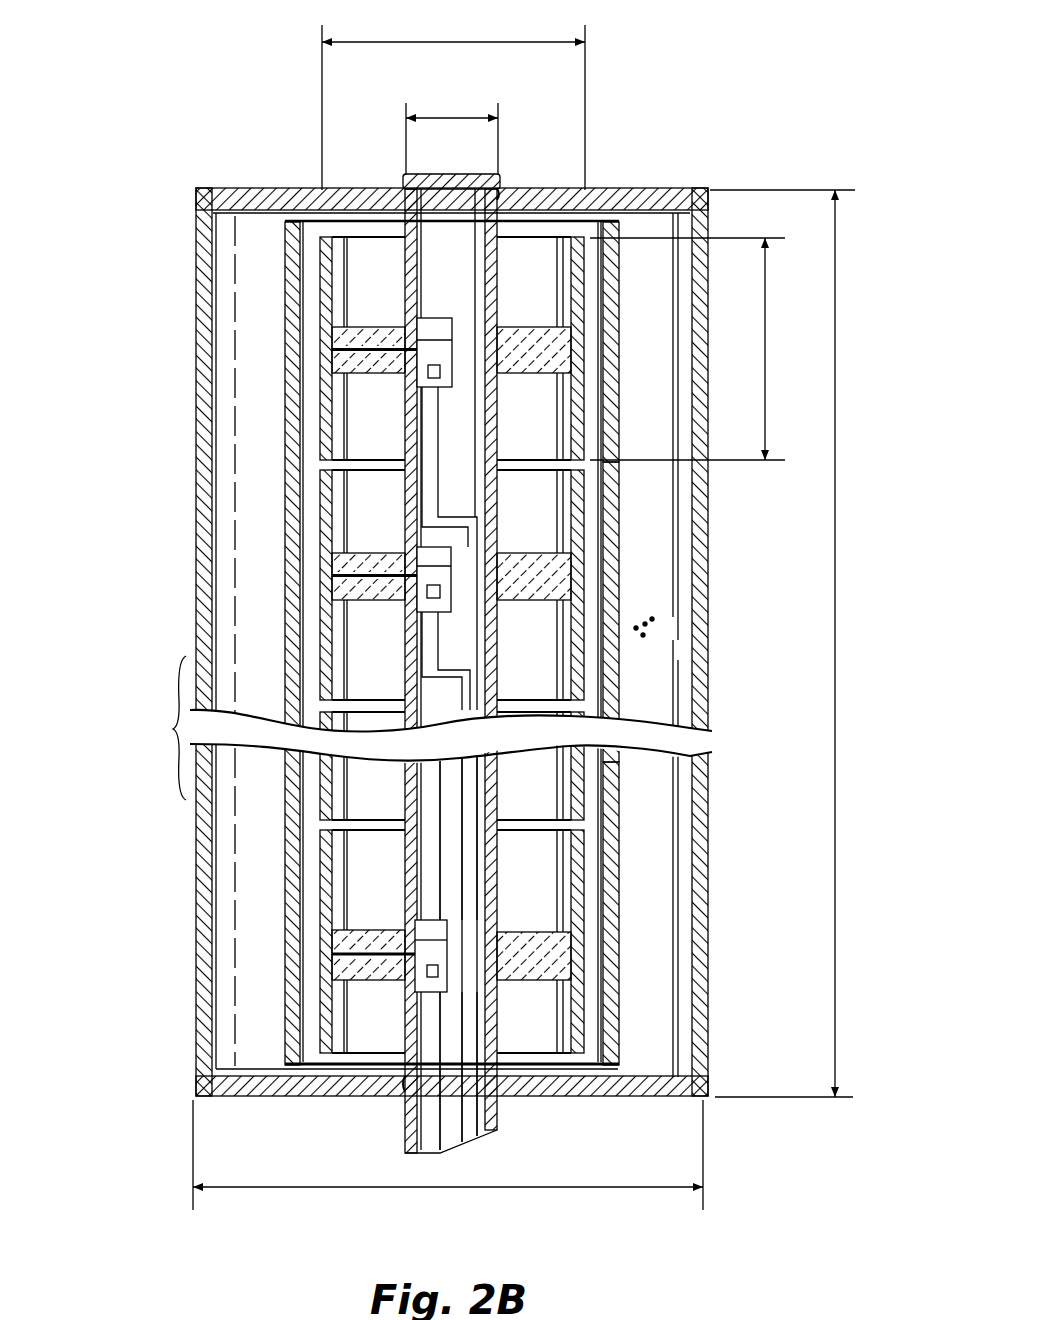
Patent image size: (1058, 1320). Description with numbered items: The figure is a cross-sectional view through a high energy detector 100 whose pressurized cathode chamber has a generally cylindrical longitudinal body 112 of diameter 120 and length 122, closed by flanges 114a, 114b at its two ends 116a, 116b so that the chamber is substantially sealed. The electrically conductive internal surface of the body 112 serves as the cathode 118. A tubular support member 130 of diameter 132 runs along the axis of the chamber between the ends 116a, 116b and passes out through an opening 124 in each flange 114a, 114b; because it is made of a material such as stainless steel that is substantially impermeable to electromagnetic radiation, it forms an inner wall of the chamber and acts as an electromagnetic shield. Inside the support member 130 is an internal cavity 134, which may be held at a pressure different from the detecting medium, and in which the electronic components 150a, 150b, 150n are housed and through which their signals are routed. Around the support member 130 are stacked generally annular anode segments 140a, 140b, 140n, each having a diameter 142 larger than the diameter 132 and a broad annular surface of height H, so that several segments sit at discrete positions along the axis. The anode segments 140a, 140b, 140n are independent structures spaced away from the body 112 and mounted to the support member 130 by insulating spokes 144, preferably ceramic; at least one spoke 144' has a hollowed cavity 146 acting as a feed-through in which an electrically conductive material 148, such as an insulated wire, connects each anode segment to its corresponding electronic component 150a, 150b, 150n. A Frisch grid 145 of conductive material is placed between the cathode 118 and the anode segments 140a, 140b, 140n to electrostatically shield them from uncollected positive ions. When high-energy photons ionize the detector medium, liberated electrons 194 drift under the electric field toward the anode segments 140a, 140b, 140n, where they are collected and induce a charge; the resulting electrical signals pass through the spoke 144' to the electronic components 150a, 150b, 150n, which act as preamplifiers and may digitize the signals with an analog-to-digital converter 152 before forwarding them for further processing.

The high energy detector 100 is at (188, 155).
The longitudinal body 112 is at (196, 258).
The flange 114a is at (252, 188).
The flange 114b is at (245, 1100).
The end 116a is at (706, 150).
The end 116b is at (630, 1112).
The cathode 118 is at (244, 279).
The diameter 120 is at (455, 1190).
The length 122 is at (842, 626).
The opening 124 is at (498, 190).
The support member 130 is at (500, 1112).
The diameter 132 is at (450, 118).
The internal cavity 134 is at (456, 210).
The anode segment 140a is at (578, 300).
The anode segment 140b is at (590, 515).
The anode segment 140n is at (590, 862).
The diameter 142 is at (451, 42).
The spoke 144 is at (534, 632).
The spoke 144' is at (321, 676).
The Frisch grid 145 is at (292, 560).
The hollowed cavity 146 is at (370, 375).
The electrically conductive material 148 is at (392, 345).
The electronic component 150a is at (441, 318).
The electronic component 150b is at (430, 550).
The electronic component 150n is at (436, 930).
The analog-to-digital converter 152 is at (420, 382).
The liberated electrons 194 is at (652, 612).
The height H is at (690, 349).